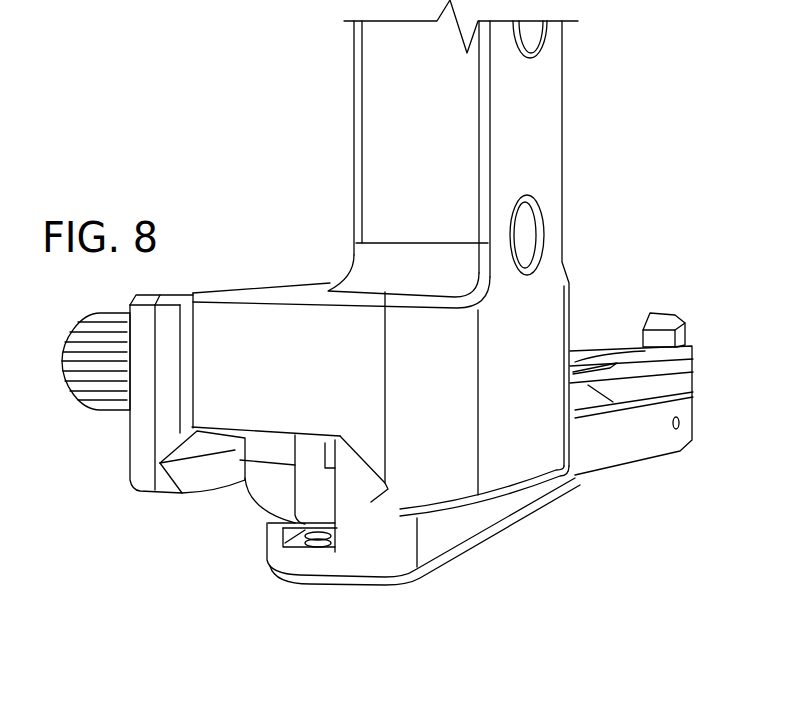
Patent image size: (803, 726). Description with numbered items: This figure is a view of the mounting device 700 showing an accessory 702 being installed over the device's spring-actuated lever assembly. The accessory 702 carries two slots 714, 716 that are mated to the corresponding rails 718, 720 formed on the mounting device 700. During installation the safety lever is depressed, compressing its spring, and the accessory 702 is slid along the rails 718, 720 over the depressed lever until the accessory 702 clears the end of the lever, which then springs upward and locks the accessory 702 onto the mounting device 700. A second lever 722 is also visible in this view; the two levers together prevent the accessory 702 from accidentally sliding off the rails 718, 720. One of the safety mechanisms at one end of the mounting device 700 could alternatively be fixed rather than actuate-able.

The mounting device 700 is at (646, 491).
The accessory 702 is at (255, 247).
The slot 714 is at (193, 485).
The slot 716 is at (371, 490).
The rail 718 is at (581, 338).
The rail 720 is at (581, 432).
The second lever 722 is at (657, 322).